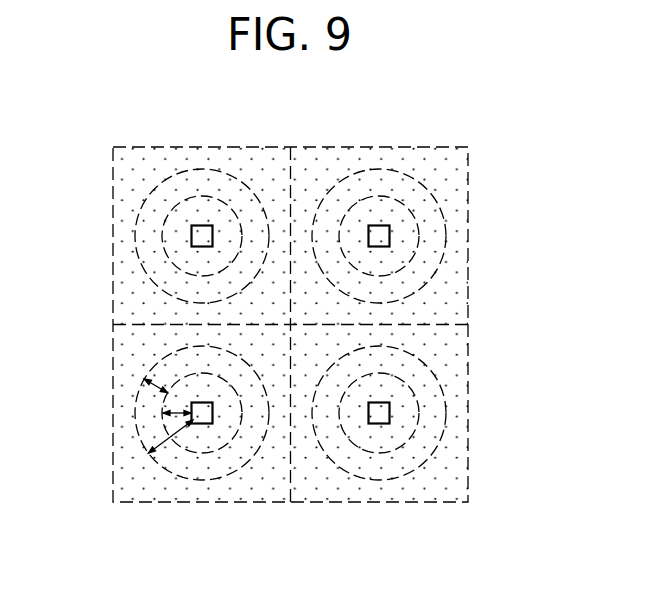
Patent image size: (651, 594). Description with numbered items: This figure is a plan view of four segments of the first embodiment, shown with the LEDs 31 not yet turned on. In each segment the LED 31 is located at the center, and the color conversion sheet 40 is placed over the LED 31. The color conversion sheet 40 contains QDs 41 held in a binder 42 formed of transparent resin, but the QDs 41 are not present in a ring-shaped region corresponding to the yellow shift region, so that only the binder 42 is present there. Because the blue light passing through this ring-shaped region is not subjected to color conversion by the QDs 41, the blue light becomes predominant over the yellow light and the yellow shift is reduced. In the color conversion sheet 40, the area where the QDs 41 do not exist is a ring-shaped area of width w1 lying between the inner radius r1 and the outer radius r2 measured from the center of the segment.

The color conversion sheet 40 is at (538, 147).
The QDs 41 is at (447, 188).
The binder 42 is at (412, 190).
The LED 31 is at (391, 238).
The width w1 is at (160, 376).
The radius r1 is at (165, 410).
The radius r2 is at (163, 440).